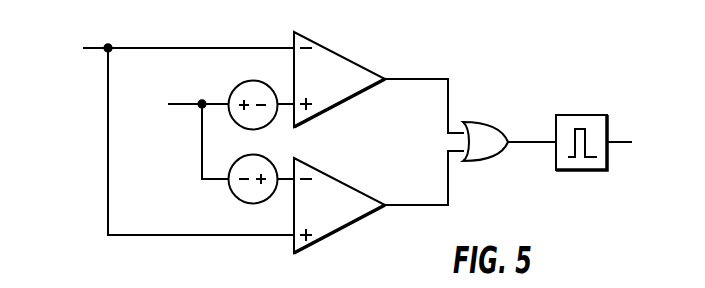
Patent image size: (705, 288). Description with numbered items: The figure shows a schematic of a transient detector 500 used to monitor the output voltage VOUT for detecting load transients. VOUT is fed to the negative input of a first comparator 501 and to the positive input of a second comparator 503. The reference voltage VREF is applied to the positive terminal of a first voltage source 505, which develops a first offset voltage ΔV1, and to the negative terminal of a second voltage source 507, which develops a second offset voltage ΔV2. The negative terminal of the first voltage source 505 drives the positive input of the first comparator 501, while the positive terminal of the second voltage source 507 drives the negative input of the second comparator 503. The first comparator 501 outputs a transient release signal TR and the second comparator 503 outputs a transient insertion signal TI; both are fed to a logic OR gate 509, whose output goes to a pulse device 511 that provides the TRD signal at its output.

The transient detector 500 is at (354, 129).
The first comparator 501 is at (339, 70).
The second comparator 503 is at (339, 195).
The first voltage source 505 is at (229, 92).
The second voltage source 507 is at (223, 190).
The logic OR gate 509 is at (495, 119).
The pulse device 511 is at (594, 123).